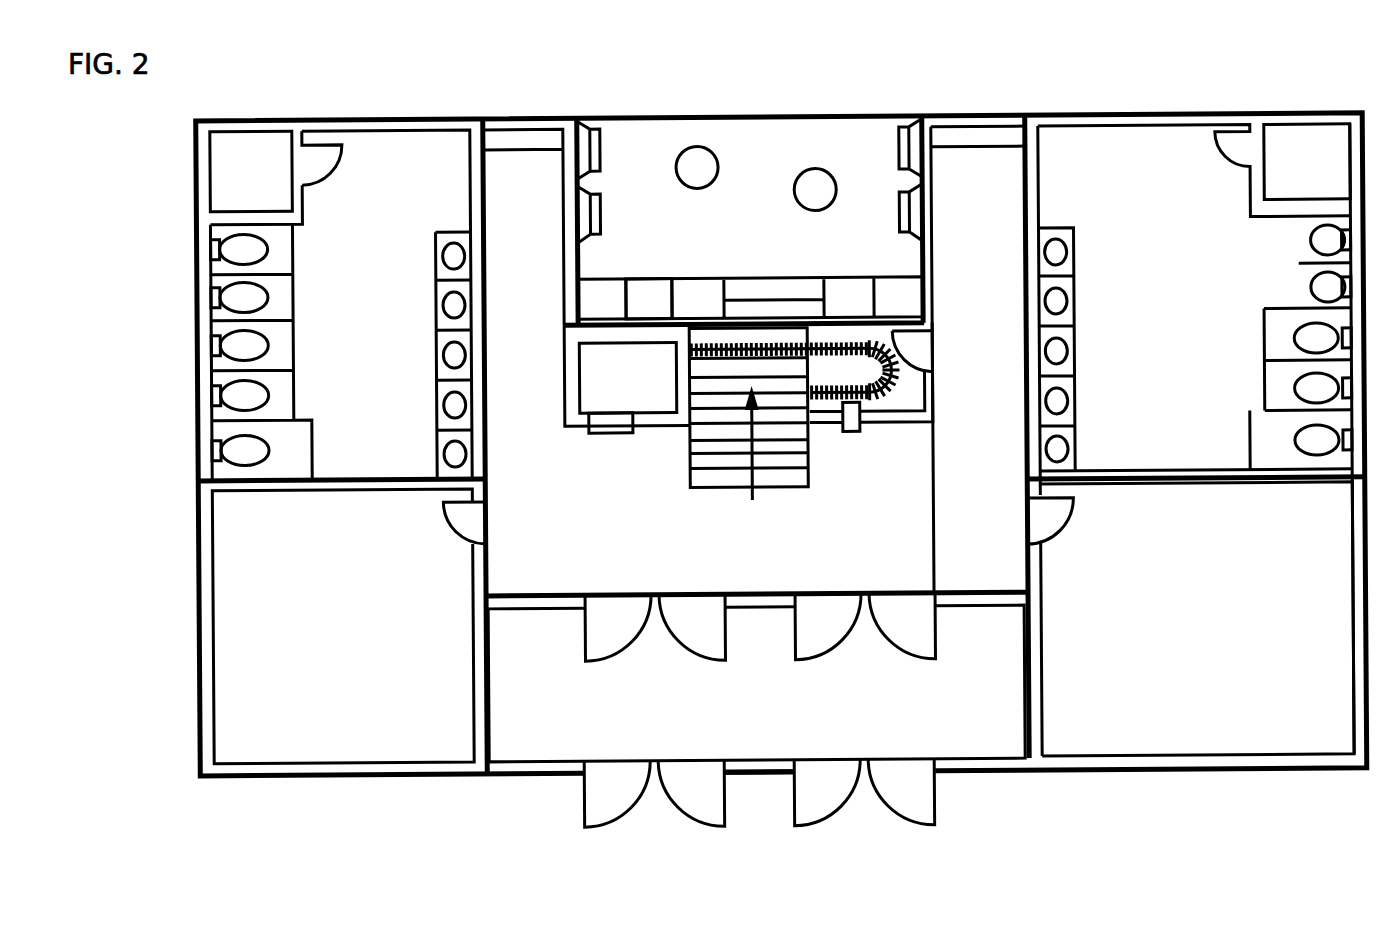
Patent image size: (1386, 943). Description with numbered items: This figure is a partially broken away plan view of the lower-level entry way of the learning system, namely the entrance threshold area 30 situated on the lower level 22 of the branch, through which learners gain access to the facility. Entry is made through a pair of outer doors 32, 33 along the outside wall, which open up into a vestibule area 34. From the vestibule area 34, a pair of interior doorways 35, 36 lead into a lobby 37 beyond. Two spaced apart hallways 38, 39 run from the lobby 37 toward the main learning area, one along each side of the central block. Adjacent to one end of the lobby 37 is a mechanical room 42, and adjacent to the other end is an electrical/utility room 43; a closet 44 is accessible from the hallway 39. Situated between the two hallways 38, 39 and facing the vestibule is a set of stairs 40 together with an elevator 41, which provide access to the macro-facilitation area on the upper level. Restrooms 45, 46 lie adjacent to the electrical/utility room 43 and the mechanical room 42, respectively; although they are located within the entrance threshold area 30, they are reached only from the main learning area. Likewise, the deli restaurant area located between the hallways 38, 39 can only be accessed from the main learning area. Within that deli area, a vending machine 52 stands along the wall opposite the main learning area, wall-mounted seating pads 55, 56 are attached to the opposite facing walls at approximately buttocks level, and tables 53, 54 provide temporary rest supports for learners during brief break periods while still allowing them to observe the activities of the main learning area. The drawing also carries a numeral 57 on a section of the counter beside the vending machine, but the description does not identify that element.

The lower level 22 is at (412, 118).
The entrance threshold area 30 is at (573, 785).
The outer door 32 is at (697, 826).
The outer door 33 is at (886, 826).
The vestibule area 34 is at (768, 723).
The interior doorway 35 is at (662, 636).
The interior doorway 36 is at (888, 647).
The lobby 37 is at (763, 566).
The hallway 38 is at (539, 369).
The hallway 39 is at (988, 362).
The set of stairs 40 is at (700, 446).
The elevator 41 is at (596, 432).
The mechanical room 42 is at (362, 646).
The electrical/utility room 43 is at (1173, 623).
The closet 44 is at (931, 350).
The restroom 45 is at (1162, 361).
The restroom 46 is at (372, 360).
The vending machine 52 is at (846, 300).
The table 53 is at (699, 166).
The table 54 is at (822, 188).
The wall-mounted seating pad 55 is at (604, 147).
The wall-mounted seating pad 56 is at (603, 205).
The counter section 57 is at (653, 300).